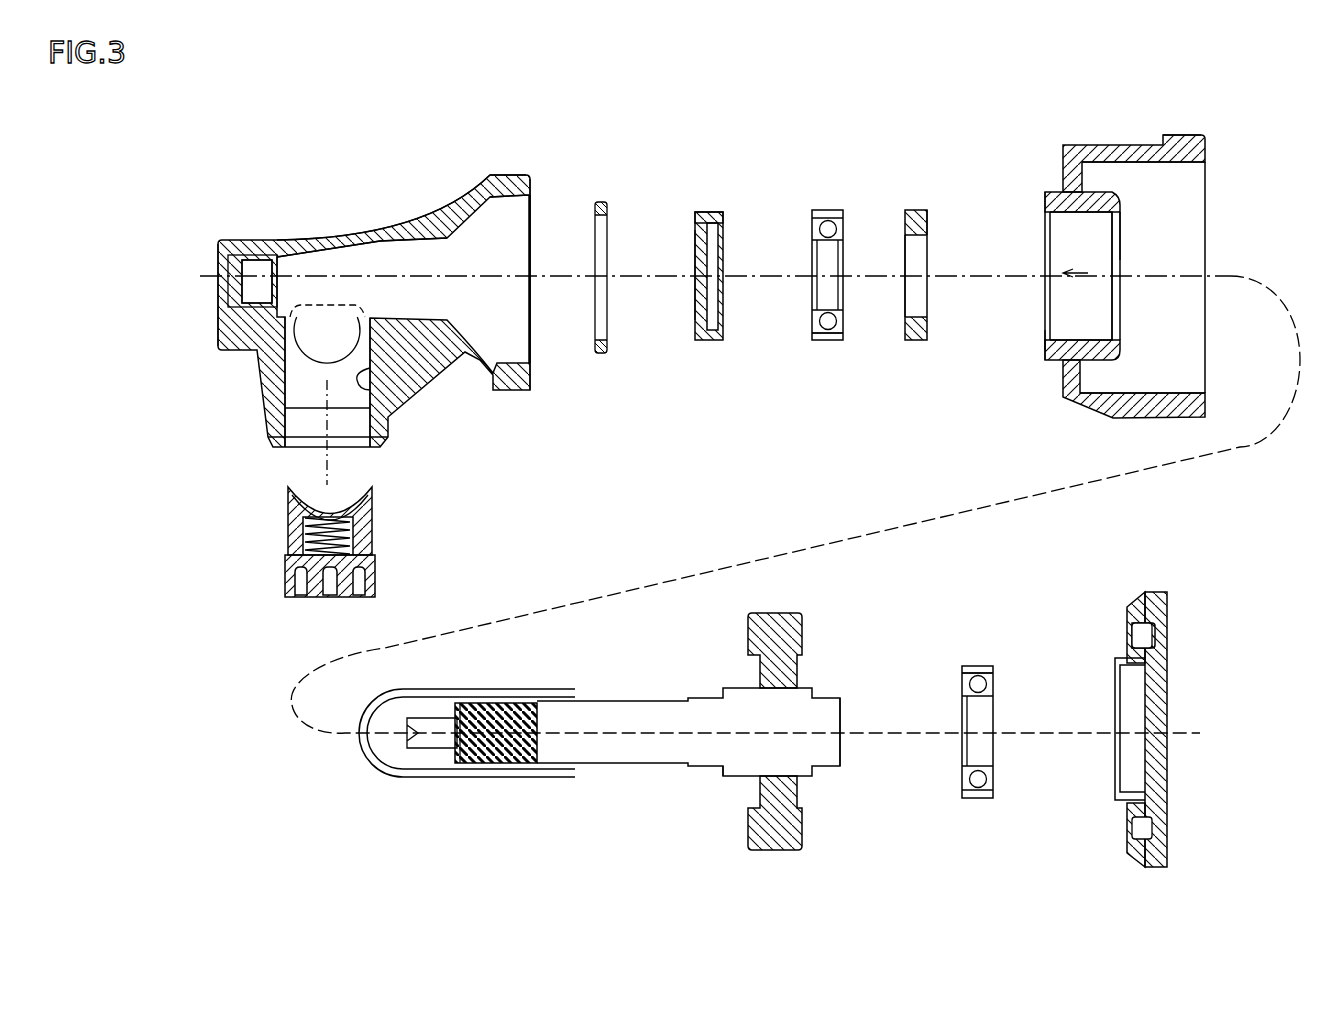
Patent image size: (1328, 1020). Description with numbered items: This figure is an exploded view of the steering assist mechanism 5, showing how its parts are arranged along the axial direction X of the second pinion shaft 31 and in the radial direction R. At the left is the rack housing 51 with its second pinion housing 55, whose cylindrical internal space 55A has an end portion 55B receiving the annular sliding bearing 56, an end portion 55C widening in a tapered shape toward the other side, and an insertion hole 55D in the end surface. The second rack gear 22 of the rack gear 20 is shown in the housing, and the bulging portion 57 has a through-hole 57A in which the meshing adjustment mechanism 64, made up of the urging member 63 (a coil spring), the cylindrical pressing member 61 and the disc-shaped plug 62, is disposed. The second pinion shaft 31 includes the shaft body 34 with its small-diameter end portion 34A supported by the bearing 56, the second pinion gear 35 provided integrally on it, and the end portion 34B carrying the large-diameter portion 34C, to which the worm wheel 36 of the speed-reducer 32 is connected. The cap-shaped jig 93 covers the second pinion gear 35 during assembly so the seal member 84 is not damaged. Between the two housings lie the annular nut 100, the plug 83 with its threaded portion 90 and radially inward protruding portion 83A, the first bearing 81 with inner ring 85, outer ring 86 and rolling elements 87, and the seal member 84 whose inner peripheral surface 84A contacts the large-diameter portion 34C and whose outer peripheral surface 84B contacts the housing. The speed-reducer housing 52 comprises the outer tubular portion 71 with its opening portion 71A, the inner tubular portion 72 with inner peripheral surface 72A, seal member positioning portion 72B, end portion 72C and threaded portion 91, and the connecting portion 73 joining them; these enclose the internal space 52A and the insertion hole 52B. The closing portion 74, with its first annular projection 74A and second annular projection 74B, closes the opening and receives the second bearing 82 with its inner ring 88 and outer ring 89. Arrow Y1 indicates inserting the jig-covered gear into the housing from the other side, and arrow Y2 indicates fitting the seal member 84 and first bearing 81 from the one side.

The steering assist mechanism 5 is at (981, 152).
The rack housing 51 is at (265, 343).
The second pinion housing 55 is at (445, 208).
The internal space 55A is at (387, 250).
The end portion 55B is at (218, 272).
The end portion 55C is at (476, 229).
The insertion hole 55D is at (510, 251).
The bearing 56 is at (252, 257).
The bulging portion 57 is at (267, 395).
The through-hole 57A is at (377, 383).
The second rack gear 22 is at (375, 322).
The rack gear 20 is at (340, 303).
The meshing adjustment mechanism 64 is at (270, 540).
The urging member 63 is at (310, 513).
The pressing member 61 is at (303, 535).
The plug 62 is at (297, 576).
The nut 100 is at (602, 353).
The plug 83 is at (680, 285).
The protruding portion 83A is at (697, 318).
The threaded portion 90 is at (713, 208).
The first bearing 81 is at (805, 312).
The inner ring 85 is at (822, 305).
The outer ring 86 is at (823, 335).
The rolling elements 87 is at (818, 322).
The seal member 84 is at (910, 282).
The inner peripheral surface 84A is at (907, 237).
The outer peripheral surface 84B is at (925, 212).
The speed-reducer housing 52 is at (1128, 362).
The internal space 52A is at (1177, 324).
The insertion hole 52B is at (1067, 314).
The outer tubular portion 71 is at (1174, 333).
The opening portion 71A is at (1198, 169).
The inner tubular portion 72 is at (1119, 328).
The inner peripheral surface 72A is at (1042, 217).
The seal member positioning portion 72B is at (1123, 220).
The end portion 72C is at (1048, 355).
The connecting portion 73 is at (1113, 417).
The threaded portion 91 is at (1047, 338).
The second pinion shaft 31 is at (655, 729).
The shaft body 34 is at (598, 700).
The end portion 34A is at (422, 742).
The end portion 34B is at (830, 745).
The large-diameter portion 34C is at (735, 770).
The second pinion gear 35 is at (513, 717).
The worm wheel 36 is at (833, 729).
The speed-reducer 32 is at (803, 622).
The jig 93 is at (522, 777).
The second bearing 82 is at (954, 739).
The inner ring 88 is at (965, 692).
The outer ring 89 is at (975, 665).
The closing portion 74 is at (1140, 729).
The first annular projection 74A is at (1127, 612).
The second annular projection 74B is at (1118, 660).
The arrow Y1 is at (1025, 497).
The arrow Y2 is at (1030, 273).
The radial direction R is at (1193, 687).
The axial direction X is at (313, 817).